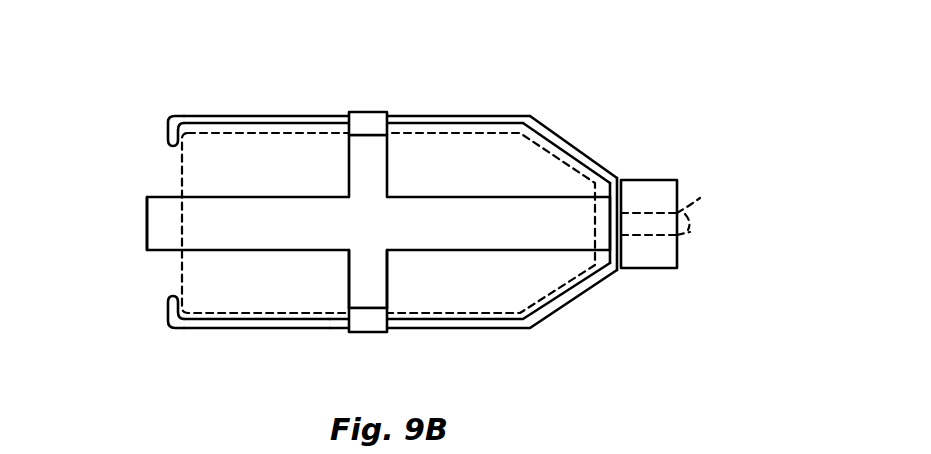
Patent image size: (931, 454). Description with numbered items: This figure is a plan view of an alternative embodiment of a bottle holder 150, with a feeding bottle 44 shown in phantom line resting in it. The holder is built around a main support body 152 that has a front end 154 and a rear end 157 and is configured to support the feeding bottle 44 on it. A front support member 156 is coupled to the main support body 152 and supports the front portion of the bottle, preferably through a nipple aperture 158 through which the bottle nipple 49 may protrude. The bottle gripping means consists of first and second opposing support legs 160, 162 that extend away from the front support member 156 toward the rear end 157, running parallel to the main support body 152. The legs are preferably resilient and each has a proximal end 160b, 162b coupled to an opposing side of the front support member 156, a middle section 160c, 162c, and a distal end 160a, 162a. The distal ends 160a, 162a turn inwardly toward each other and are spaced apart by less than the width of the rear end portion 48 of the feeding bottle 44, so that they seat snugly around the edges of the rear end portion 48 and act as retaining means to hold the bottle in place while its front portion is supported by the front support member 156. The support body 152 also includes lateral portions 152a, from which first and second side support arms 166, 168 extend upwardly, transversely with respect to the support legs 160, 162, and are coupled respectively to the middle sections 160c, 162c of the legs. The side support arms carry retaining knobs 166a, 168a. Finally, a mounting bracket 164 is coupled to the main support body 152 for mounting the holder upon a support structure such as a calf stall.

The feeding bottle 44 is at (318, 112).
The rear end portion 48 is at (171, 163).
The bottle nipple 49 is at (700, 198).
The bottle holder 150 is at (483, 78).
The main support body 152 is at (470, 233).
The lateral portions 152a is at (378, 270).
The front end 154 is at (565, 220).
The front support member 156 is at (622, 245).
The rear end 157 is at (157, 227).
The nipple aperture 158 is at (628, 215).
The first support leg 160 is at (257, 324).
The distal end of first support leg 160a is at (162, 298).
The proximal end of first support leg 160b is at (583, 290).
The middle section of first support leg 160c is at (333, 328).
The second support leg 162 is at (253, 120).
The distal end of second support leg 162a is at (162, 131).
The proximal end of second support leg 162b is at (551, 118).
The middle section of second support leg 162c is at (407, 115).
The mounting bracket 164 is at (668, 250).
The first side support arm 166 is at (370, 335).
The retaining knob 166a is at (362, 320).
The second side support arm 168 is at (366, 112).
The retaining knob 168a is at (370, 122).